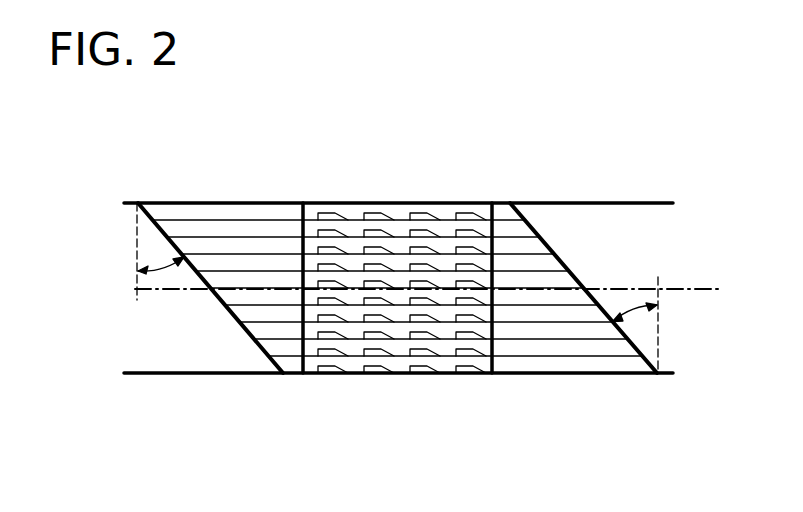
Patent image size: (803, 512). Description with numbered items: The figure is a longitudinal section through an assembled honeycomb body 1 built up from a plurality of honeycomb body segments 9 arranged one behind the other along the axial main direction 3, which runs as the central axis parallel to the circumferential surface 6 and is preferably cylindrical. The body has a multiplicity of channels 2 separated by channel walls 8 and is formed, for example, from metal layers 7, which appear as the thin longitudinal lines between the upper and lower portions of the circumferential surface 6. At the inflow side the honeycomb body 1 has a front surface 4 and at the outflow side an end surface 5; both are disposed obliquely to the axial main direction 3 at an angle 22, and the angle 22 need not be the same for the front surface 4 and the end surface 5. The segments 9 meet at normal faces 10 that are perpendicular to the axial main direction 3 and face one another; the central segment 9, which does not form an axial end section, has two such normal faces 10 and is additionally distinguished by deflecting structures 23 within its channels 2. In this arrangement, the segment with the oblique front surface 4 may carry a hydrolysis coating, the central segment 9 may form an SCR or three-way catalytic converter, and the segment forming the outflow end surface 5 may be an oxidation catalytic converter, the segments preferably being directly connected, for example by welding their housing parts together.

The honeycomb body 1 is at (523, 183).
The channels 2 is at (284, 373).
The axial main direction 3 is at (719, 290).
The front surface 4 is at (232, 320).
The end surface 5 is at (538, 203).
The circumferential surface 6 is at (358, 203).
The metal layers 7 is at (222, 218).
The channel walls 8 is at (268, 218).
The honeycomb body segments 9 is at (288, 360).
The normal faces 10 is at (303, 203).
The angle 22 is at (155, 230).
The deflecting structures 23 is at (420, 203).